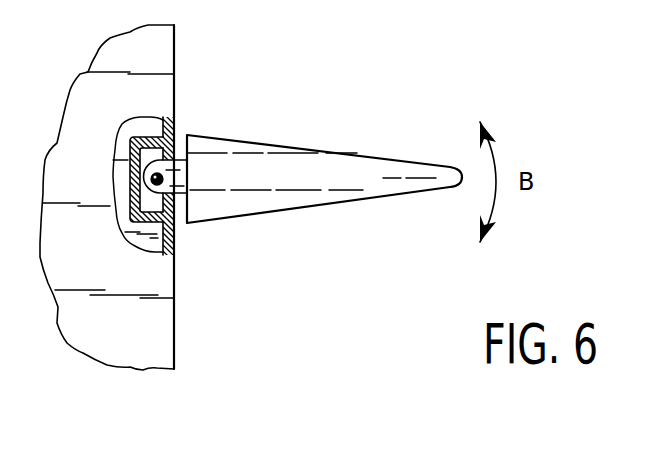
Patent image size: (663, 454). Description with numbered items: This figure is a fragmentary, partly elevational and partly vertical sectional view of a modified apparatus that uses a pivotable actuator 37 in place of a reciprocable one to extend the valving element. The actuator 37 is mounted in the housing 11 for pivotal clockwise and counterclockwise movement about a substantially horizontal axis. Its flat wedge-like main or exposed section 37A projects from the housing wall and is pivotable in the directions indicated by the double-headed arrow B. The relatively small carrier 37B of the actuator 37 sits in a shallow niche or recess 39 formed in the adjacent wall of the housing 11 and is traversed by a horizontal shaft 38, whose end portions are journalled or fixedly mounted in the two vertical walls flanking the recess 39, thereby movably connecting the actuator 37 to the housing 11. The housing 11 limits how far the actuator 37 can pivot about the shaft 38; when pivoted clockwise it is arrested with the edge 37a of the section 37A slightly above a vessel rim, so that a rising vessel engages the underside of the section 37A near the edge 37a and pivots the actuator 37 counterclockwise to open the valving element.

The housing 11 is at (177, 44).
The actuator 37 is at (365, 140).
The edge 37a is at (457, 182).
The main or exposed section 37A is at (308, 180).
The carrier 37B is at (187, 183).
The shaft 38 is at (160, 171).
The recess 39 is at (143, 155).